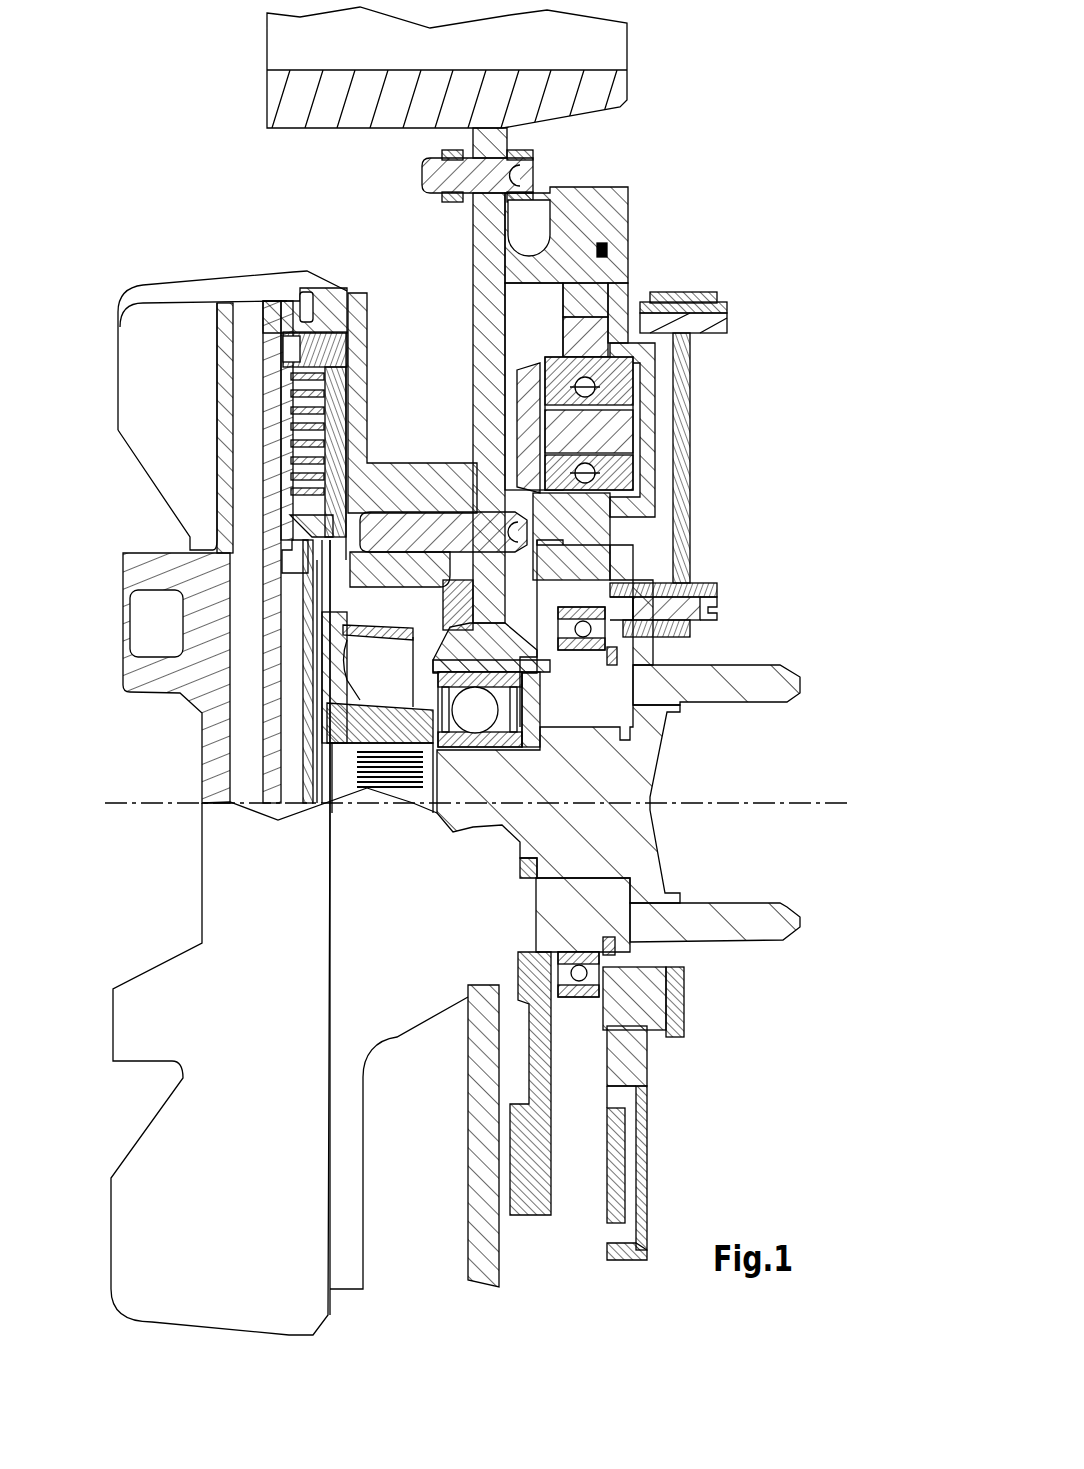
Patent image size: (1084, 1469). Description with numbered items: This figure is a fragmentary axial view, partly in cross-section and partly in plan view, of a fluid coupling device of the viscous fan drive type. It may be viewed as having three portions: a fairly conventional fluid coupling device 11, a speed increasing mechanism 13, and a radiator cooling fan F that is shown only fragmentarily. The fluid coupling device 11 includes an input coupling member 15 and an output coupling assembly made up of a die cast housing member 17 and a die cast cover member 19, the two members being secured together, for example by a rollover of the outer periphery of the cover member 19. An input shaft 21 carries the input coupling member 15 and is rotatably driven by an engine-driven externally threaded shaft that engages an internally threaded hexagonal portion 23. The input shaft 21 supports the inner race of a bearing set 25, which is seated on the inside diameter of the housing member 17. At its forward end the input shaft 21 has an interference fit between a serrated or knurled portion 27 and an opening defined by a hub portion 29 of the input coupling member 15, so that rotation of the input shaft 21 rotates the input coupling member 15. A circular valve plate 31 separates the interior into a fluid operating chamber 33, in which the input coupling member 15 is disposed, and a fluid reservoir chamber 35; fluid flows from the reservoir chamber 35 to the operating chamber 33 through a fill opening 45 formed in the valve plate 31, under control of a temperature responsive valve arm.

The radiator cooling fan F is at (612, 48).
The fluid coupling device 11 is at (118, 292).
The speed increasing mechanism 13 is at (700, 272).
The input coupling member 15 is at (345, 352).
The housing member 17 is at (358, 413).
The cover member 19 is at (216, 483).
The input shaft 21 is at (627, 838).
The internally threaded hexagonal portion 23 is at (750, 690).
The bearing set 25 is at (474, 716).
The serrated or knurled portion 27 is at (393, 780).
The hub portion 29 is at (373, 722).
The circular valve plate 31 is at (235, 740).
The fluid operating chamber 33 is at (405, 619).
The fluid reservoir chamber 35 is at (265, 620).
The fill opening 45 is at (300, 575).